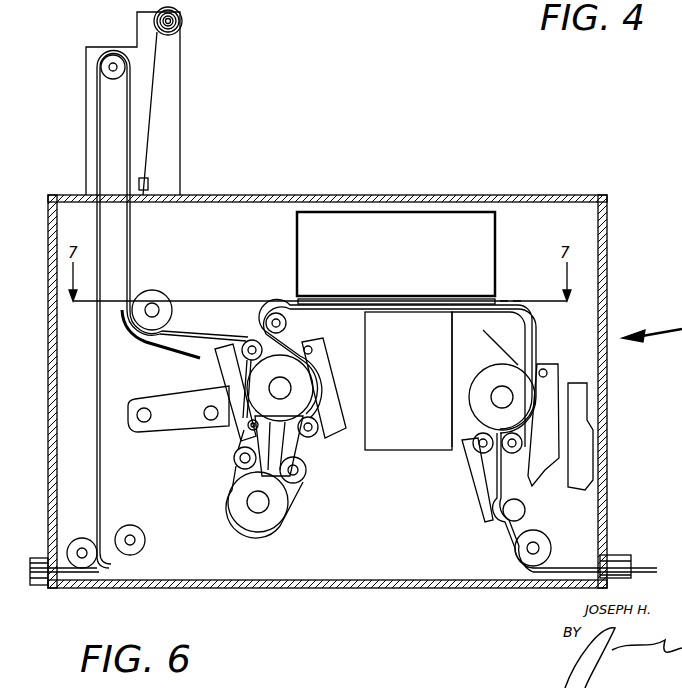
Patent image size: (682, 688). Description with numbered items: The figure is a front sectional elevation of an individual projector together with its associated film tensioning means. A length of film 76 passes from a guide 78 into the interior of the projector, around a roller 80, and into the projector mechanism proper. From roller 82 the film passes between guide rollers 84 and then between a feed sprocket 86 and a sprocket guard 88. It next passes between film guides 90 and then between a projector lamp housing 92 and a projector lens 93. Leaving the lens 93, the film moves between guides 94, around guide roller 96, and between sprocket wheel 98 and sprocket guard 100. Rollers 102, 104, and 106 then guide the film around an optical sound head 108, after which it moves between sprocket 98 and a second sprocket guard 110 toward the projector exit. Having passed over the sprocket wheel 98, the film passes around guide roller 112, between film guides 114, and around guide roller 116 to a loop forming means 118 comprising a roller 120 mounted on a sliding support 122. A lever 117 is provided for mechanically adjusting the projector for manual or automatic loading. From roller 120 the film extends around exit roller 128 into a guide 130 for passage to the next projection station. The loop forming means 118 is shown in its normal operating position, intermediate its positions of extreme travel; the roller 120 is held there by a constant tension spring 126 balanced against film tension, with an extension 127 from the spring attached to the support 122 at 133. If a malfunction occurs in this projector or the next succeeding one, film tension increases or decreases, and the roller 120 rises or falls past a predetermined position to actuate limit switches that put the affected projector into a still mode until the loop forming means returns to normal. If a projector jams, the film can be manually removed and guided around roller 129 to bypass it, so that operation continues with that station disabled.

The film 76 is at (645, 568).
The guide 78 is at (610, 556).
The roller 80 is at (548, 544).
The roller 82 is at (526, 510).
The guide rollers 84 is at (480, 454).
The feed sprocket 86 is at (498, 362).
The sprocket guard 88 is at (565, 375).
The film guides 90 is at (540, 332).
The projector lamp housing 92 is at (458, 212).
The projector lens 93 is at (400, 452).
The guides 94 is at (276, 301).
The guide roller 96 is at (280, 312).
The sprocket wheel 98 is at (303, 382).
The sprocket guard 100 is at (342, 433).
The roller 102 is at (315, 438).
The roller 104 is at (301, 482).
The roller 106 is at (233, 458).
The optical sound head 108 is at (238, 518).
The sprocket guard 110 is at (215, 358).
The guide roller 112 is at (248, 340).
The film guides 114 is at (150, 343).
The guide roller 116 is at (150, 294).
The lever 117 is at (155, 430).
The loop forming means 118 is at (80, 46).
The roller 120 is at (101, 68).
The sliding support 122 is at (86, 99).
The constant tension spring 126 is at (182, 19).
The extension 127 is at (147, 85).
The exit roller 128 is at (72, 540).
The roller 129 is at (141, 528).
The guide 130 is at (44, 558).
The attachment point 133 is at (148, 181).